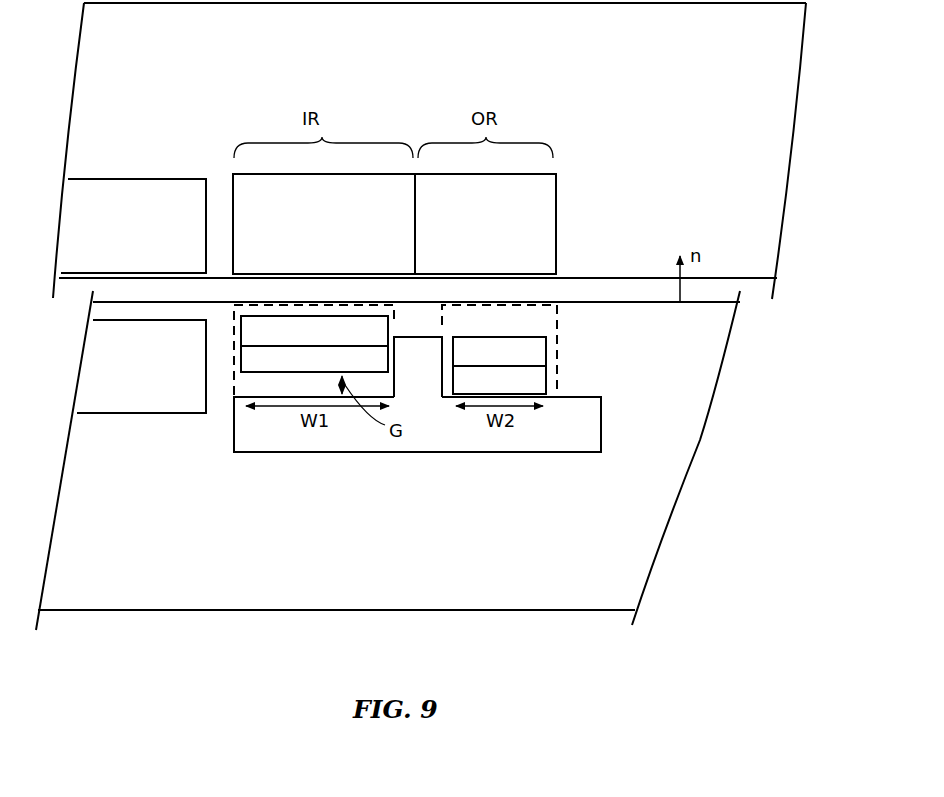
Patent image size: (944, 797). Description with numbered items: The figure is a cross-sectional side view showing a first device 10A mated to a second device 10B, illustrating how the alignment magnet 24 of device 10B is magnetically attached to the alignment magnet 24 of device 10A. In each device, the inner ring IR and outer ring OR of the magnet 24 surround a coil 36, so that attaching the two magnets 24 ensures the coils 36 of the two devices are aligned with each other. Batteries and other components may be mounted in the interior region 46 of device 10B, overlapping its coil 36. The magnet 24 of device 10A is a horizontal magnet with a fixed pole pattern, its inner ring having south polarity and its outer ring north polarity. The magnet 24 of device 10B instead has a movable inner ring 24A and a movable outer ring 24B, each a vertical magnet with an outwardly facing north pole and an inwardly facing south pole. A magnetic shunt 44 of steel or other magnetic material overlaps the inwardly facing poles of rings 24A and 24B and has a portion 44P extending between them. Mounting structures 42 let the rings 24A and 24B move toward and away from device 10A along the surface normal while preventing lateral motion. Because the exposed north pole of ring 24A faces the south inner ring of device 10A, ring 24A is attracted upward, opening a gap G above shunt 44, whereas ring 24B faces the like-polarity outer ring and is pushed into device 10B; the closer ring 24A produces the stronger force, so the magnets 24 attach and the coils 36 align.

The first device 10A is at (780, 157).
The second device 10B is at (700, 440).
The coil 36 is at (118, 182).
The alignment magnet 24 is at (570, 199).
The movable inner ring 24A is at (241, 348).
The movable outer ring 24B is at (540, 377).
The mounting structures 42 is at (232, 333).
The magnetic shunt 44 is at (435, 443).
The shunt portion 44P is at (414, 347).
The interior region 46 is at (115, 553).